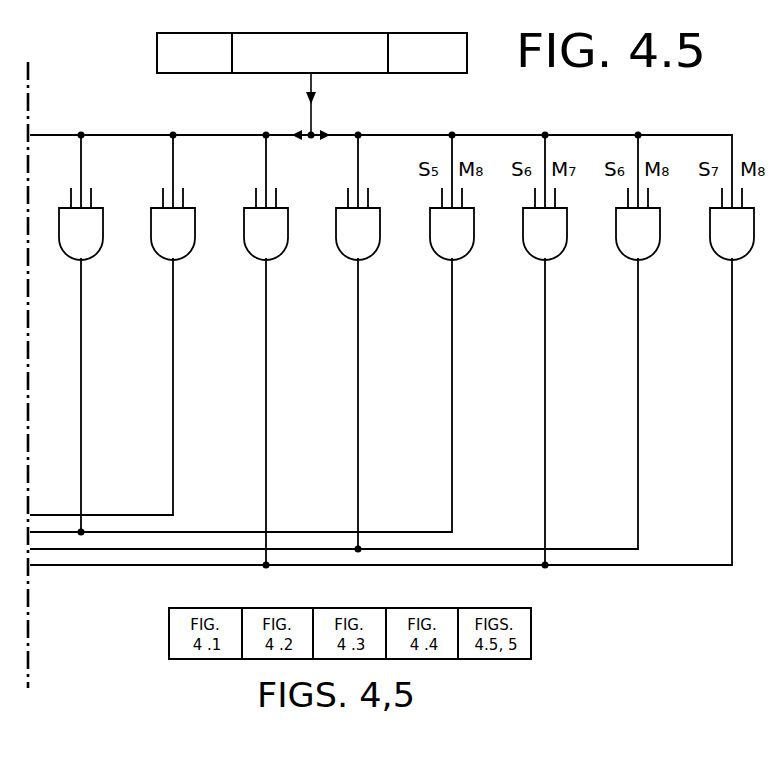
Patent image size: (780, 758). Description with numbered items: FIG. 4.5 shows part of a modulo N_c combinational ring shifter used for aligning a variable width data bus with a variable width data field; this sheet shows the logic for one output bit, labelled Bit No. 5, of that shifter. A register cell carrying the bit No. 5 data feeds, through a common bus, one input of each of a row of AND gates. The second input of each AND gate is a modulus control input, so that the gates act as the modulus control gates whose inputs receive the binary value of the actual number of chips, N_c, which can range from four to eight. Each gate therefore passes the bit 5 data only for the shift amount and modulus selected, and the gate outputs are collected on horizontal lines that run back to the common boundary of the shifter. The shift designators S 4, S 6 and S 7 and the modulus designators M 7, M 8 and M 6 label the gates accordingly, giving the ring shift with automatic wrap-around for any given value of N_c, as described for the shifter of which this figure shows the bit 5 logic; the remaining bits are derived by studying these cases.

The Bit No.5 register cell 5 is at (312, 86).
The AND gate S4 M7 4 is at (80, 333).
The AND gate S4 M8 8 is at (117, 325).
The AND gate S5 M6 6 is at (265, 350).
The AND gate S5 M7 7 is at (357, 342).